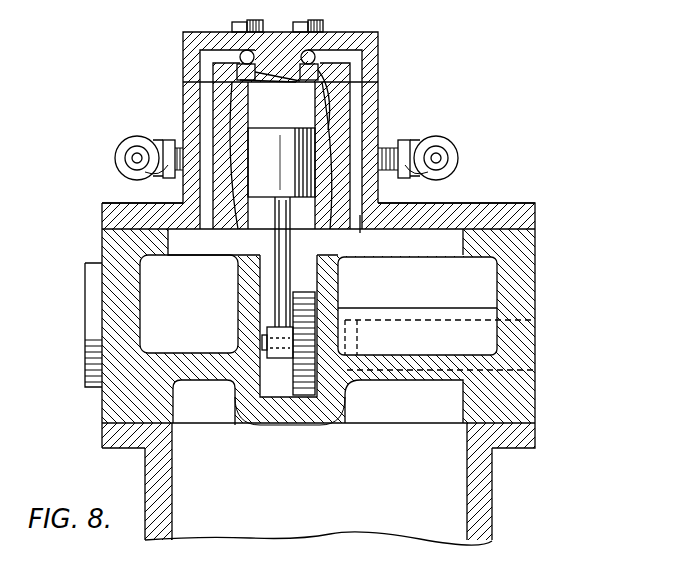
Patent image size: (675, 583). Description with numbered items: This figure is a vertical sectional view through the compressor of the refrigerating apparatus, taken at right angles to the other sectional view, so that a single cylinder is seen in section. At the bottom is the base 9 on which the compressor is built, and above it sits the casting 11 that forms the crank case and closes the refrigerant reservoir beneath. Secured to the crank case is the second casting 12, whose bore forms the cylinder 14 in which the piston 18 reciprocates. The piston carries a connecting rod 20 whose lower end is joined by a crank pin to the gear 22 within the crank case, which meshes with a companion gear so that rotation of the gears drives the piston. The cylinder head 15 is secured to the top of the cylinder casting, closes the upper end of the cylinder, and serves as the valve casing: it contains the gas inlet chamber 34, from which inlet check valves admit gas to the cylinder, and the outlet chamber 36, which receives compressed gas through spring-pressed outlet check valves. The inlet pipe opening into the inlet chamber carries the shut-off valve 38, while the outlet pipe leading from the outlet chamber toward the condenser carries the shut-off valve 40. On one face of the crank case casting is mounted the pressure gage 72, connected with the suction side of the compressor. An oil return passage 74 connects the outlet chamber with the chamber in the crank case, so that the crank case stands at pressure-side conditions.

The base casing 9 is at (495, 500).
The casting 11 is at (535, 292).
The second casting 12 is at (490, 203).
The bore 14 is at (305, 112).
The cylinder head 15 is at (378, 58).
The piston 18 is at (281, 162).
The connecting rod 20 is at (275, 262).
The gear 22 is at (308, 300).
The gas inlet chamber 34 is at (217, 52).
The outlet chamber 36 is at (335, 55).
The shut-off valve 38 is at (120, 150).
The shut-off valve 40 is at (452, 145).
The pressure gage 72 is at (85, 304).
The oil return passage 74 is at (360, 230).